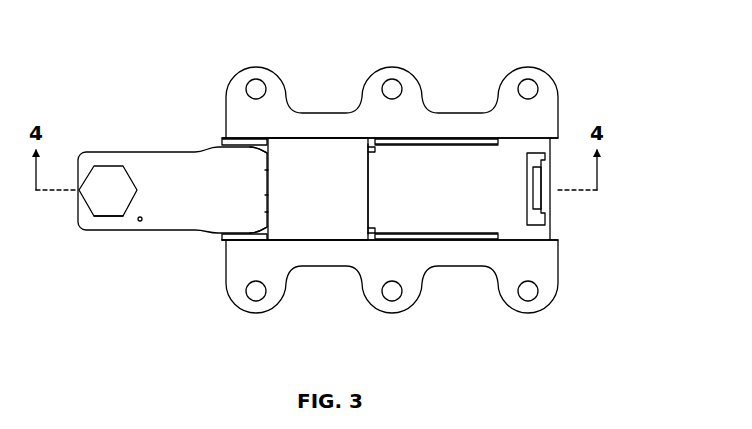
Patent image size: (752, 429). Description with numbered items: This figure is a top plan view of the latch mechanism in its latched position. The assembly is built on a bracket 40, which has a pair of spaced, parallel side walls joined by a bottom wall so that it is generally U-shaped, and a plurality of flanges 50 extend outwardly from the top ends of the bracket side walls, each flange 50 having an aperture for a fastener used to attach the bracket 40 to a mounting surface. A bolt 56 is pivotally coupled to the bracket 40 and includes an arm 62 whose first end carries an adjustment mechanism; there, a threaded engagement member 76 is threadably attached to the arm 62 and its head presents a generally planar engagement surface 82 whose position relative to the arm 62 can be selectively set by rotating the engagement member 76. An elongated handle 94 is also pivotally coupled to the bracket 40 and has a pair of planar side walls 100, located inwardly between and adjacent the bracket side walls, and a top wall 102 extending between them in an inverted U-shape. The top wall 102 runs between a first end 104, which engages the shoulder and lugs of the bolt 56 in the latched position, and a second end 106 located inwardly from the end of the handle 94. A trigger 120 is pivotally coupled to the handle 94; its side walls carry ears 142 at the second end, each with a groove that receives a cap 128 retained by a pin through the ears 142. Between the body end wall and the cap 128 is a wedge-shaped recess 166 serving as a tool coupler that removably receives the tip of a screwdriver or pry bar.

The bracket 40 is at (563, 82).
The flanges 50 is at (251, 70).
The bolt 56 is at (128, 147).
The arm 62 is at (140, 223).
The engagement member 76 is at (100, 222).
The engagement surface 82 is at (97, 197).
The handle 94 is at (302, 160).
The side walls 100 is at (428, 145).
The top wall 102 is at (343, 223).
The first end 104 is at (267, 190).
The second end 106 is at (372, 165).
The trigger 120 is at (417, 215).
The cap 128 is at (545, 215).
The ears 142 is at (505, 133).
The recess 166 is at (537, 190).